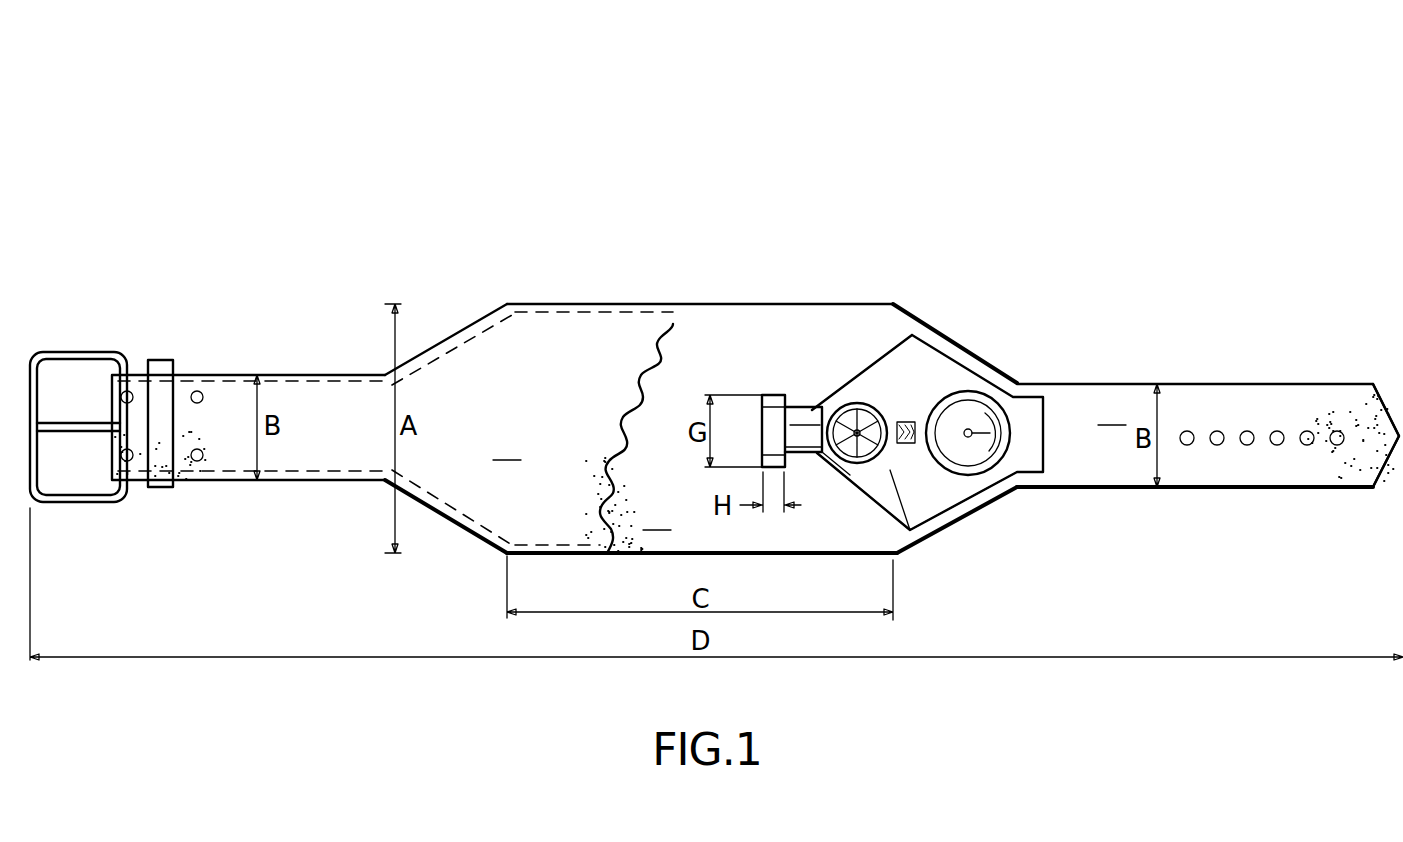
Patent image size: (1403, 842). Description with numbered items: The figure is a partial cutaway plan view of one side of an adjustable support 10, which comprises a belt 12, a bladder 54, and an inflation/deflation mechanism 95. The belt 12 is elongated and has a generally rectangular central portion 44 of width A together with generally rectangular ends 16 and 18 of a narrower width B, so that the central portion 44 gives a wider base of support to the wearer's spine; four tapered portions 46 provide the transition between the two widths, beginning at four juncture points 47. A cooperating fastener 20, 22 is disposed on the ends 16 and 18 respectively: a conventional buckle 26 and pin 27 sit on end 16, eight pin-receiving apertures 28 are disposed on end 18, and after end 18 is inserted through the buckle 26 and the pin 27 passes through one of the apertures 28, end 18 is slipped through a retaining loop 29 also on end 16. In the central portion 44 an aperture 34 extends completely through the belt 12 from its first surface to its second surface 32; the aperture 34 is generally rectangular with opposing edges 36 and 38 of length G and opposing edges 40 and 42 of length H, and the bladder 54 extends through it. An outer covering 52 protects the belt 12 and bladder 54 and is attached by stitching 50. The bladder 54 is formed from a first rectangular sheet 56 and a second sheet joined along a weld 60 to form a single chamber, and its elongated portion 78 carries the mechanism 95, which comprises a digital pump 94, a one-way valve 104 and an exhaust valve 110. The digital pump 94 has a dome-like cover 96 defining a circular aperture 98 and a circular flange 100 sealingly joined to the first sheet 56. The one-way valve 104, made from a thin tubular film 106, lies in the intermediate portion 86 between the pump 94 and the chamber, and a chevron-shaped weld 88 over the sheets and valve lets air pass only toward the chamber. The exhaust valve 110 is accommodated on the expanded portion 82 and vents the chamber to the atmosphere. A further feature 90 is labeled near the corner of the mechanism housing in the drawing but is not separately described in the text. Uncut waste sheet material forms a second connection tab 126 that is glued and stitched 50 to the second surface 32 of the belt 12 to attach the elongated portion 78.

The adjustable support 10 is at (622, 270).
The belt 12 is at (629, 438).
The end 16 is at (325, 405).
The end 18 is at (1323, 397).
The cooperating fastener 20 is at (98, 312).
The cooperating fastener 22 is at (1330, 463).
The buckle 26 is at (62, 504).
The pin 27 is at (63, 423).
The pin-receiving apertures 28 is at (1223, 487).
The retaining loop 29 is at (160, 360).
The second surface 32 is at (1111, 409).
The aperture 34 is at (765, 395).
The edge 36 is at (760, 399).
The edge 38 is at (785, 460).
The edge 40 is at (787, 403).
The edge 42 is at (780, 467).
The central portion 44 is at (735, 318).
The tapered portions 46 is at (454, 336).
The juncture points 47 is at (507, 302).
The stitching 50 is at (570, 553).
The outer covering 52 is at (506, 444).
The bladder 54 is at (790, 425).
The first rectangular sheet 56 is at (907, 363).
The weld 60 is at (851, 402).
The elongated portion 78 is at (760, 242).
The expanded portion 82 is at (878, 455).
The intermediate portion 86 is at (933, 400).
The chevron-shaped weld 88 is at (903, 444).
The frame corner 90 is at (1047, 400).
The digital pump 94 is at (997, 397).
The inflation/deflation mechanism 95 is at (1108, 228).
The dome-like cover 96 is at (1045, 490).
The circular aperture 98 is at (993, 436).
The circular flange 100 is at (973, 510).
The one-way valve 104 is at (925, 520).
The thin tubular film 106 is at (889, 419).
The exhaust valve 110 is at (840, 467).
The second connection tab 126 is at (960, 375).